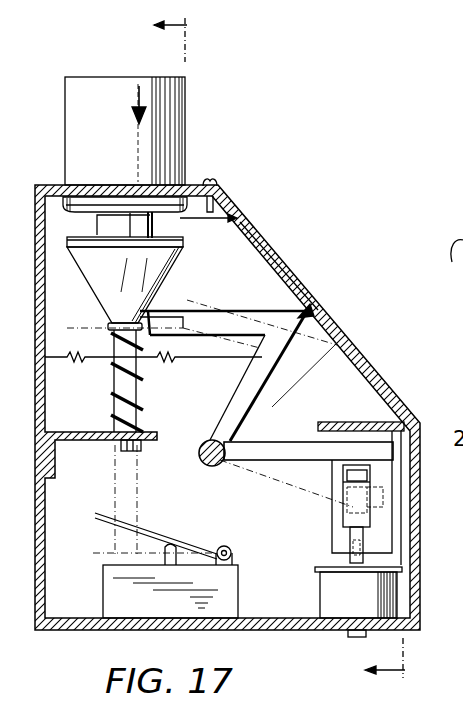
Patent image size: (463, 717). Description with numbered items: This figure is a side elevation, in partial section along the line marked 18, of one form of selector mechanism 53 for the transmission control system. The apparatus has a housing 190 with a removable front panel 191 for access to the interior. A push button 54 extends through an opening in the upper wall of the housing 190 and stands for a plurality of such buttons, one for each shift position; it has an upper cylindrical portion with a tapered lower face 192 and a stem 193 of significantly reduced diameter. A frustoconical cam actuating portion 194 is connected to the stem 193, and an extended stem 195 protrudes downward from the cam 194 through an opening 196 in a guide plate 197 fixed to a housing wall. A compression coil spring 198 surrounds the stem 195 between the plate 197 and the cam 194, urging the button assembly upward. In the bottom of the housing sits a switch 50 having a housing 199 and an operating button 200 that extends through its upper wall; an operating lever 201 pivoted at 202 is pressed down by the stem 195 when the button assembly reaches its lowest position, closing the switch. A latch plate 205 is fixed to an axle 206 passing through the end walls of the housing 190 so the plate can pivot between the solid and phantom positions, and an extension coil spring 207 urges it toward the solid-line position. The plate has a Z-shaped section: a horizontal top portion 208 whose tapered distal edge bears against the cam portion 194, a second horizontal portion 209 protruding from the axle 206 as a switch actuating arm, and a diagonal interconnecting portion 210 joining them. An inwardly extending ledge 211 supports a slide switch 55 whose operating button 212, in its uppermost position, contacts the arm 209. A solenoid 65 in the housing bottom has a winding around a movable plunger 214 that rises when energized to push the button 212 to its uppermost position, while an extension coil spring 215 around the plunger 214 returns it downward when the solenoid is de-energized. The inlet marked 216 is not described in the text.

The section line 18- 18 is at (297, 350).
The switch 50 is at (101, 586).
The selector mechanism 53 is at (36, 244).
The push button 54 is at (67, 108).
The switch 55 is at (405, 470).
The solenoid 65 is at (400, 583).
The housing 190 is at (44, 508).
The front panel 191 is at (247, 200).
The tapered lower face 192 is at (68, 203).
The stem 193 is at (152, 222).
The cam actuating portion 194 is at (88, 283).
The extended stem 195 is at (110, 372).
The opening 196 is at (138, 447).
The guide plate 197 is at (102, 432).
The compression coil spring 198 is at (142, 407).
The switch housing 199 is at (238, 600).
The operating button 200 is at (216, 546).
The operating lever 201 is at (146, 532).
The pivot 202 is at (232, 553).
The latch plate 205 is at (312, 312).
The axle 206 is at (220, 467).
The extension coil spring 207 is at (86, 350).
The horizontal top portion 208 is at (242, 314).
The second horizontal portion 209 is at (272, 420).
The diagonal interconnecting portion 210 is at (235, 370).
The ledge 211 is at (353, 422).
The operating button 212 is at (345, 478).
The plunger 214 is at (348, 532).
The extension coil spring 215 is at (397, 540).
The air inlet 216 is at (141, 91).